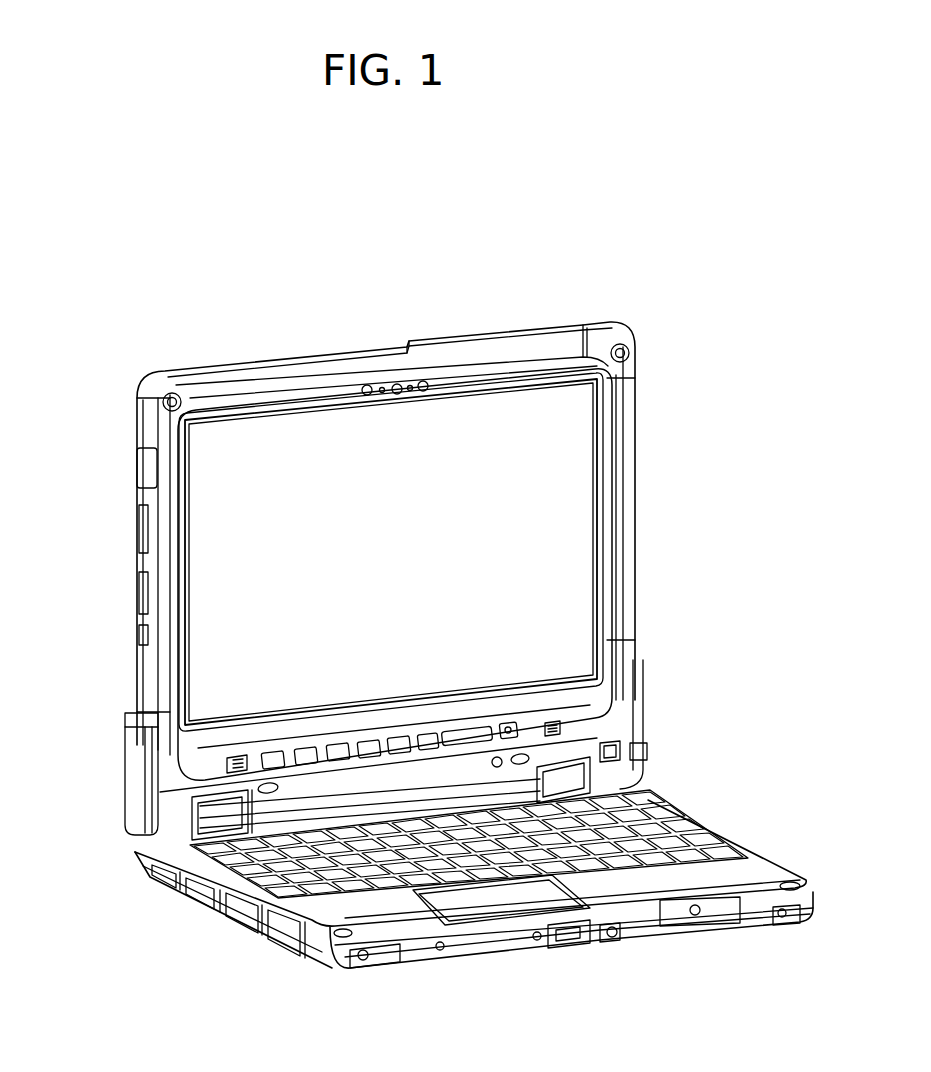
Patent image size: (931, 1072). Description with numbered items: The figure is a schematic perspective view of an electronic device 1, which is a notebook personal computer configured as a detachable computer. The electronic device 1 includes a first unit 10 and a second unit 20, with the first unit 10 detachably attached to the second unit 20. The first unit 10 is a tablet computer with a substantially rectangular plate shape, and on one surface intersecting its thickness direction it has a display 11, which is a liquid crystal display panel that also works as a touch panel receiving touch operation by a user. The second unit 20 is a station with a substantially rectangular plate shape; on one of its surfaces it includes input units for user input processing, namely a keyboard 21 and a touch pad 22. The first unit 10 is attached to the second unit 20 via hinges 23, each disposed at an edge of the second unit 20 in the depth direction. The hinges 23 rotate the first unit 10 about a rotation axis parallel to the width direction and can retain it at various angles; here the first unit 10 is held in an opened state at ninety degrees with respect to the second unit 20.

The electronic device 1 is at (144, 255).
The first unit 10 is at (302, 384).
The display 11 is at (568, 494).
The second unit 20 is at (632, 925).
The keyboard 21 is at (643, 838).
The touch pad 22 is at (502, 892).
The hinges 23 is at (215, 818).